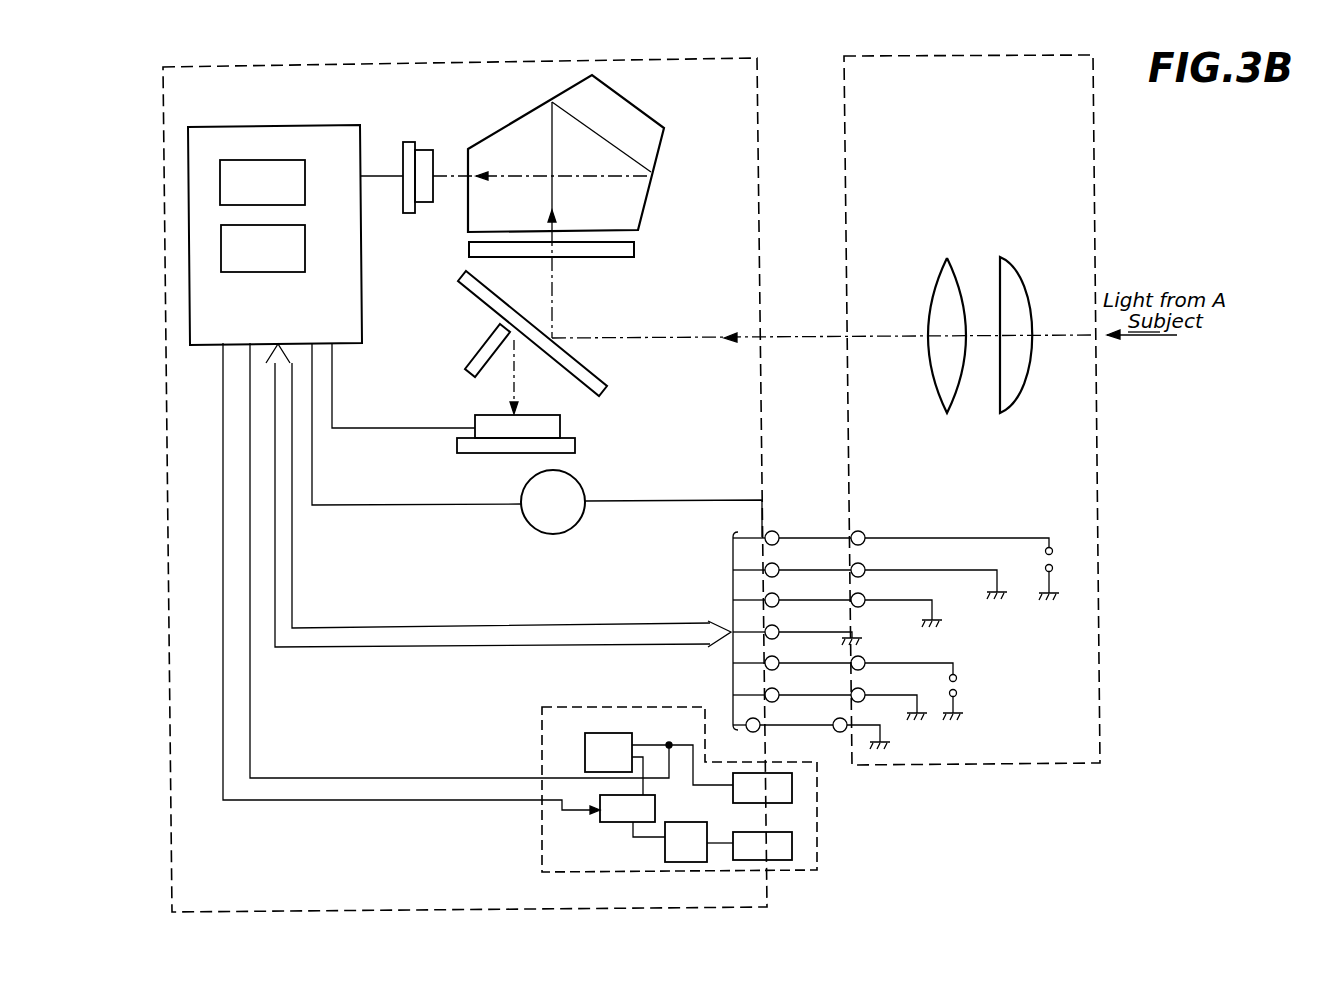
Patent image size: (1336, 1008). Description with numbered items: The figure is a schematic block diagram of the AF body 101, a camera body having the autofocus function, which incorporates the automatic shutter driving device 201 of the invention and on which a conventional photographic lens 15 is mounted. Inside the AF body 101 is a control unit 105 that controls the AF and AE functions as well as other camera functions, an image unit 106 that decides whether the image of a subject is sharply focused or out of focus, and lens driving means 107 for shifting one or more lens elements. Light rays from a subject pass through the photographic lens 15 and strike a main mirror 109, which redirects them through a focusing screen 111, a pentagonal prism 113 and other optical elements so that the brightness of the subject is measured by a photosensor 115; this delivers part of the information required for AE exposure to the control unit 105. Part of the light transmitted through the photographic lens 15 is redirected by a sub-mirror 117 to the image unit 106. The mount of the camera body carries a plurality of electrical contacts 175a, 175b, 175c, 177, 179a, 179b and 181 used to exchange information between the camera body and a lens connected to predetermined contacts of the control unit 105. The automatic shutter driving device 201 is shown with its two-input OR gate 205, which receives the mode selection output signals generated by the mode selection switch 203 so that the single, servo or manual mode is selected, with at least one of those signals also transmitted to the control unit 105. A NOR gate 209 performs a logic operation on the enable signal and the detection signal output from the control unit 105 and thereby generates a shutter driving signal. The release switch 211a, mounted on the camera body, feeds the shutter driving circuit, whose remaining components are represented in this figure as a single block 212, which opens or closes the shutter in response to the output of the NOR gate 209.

The AF body 101 is at (757, 97).
The conventional photographic lens 15 is at (1134, 106).
The control unit 105 is at (213, 127).
The photosensor 115 is at (410, 142).
The pentagonal prism 113 is at (640, 112).
The focusing screen 111 is at (634, 249).
The main mirror 109 is at (606, 378).
The sub-mirror 117 is at (488, 347).
The image unit 106 is at (575, 443).
The lens driving means 107 is at (584, 489).
The electrical contact 175a is at (896, 557).
The electrical contact 175b is at (870, 572).
The electrical contact 175c is at (837, 602).
The electrical contact 177 is at (797, 627).
The electrical contact 179a is at (848, 680).
The electrical contact 179b is at (830, 696).
The electrical contact 181 is at (811, 725).
The automatic shutter driving device 201 is at (634, 777).
The OR gate 205 is at (618, 733).
The NOR gate 209 is at (615, 823).
The mode selection switch 203 is at (792, 790).
The release switch 211a is at (792, 845).
The block 212 is at (708, 862).